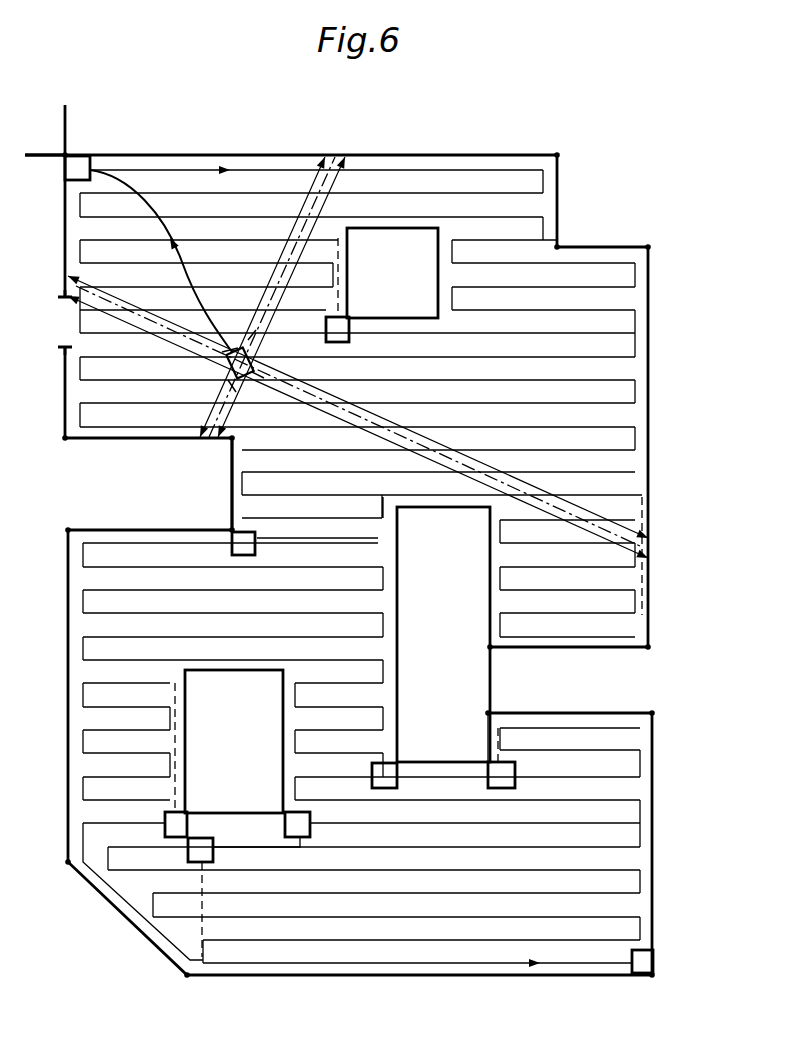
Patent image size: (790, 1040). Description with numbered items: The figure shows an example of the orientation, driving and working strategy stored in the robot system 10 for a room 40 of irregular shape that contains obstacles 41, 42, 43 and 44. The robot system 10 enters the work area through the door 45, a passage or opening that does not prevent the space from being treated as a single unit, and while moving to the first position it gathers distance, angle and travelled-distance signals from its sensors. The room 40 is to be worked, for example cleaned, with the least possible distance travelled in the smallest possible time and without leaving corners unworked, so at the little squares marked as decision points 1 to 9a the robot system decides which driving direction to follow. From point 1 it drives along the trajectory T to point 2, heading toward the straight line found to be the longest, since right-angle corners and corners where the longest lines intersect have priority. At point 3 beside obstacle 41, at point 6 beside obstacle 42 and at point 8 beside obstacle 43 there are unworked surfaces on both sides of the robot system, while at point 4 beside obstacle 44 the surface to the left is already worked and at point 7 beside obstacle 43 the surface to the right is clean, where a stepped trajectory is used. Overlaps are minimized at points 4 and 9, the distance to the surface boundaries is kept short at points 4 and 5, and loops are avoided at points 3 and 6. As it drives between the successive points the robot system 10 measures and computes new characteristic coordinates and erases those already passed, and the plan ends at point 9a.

The room 40 is at (262, 134).
The obstacle 41 is at (404, 304).
The obstacle 42 is at (458, 639).
The obstacle 43 is at (248, 775).
The obstacle 44 is at (232, 482).
The door 45 is at (62, 322).
The robot system 10 is at (226, 366).
The trajectory T is at (168, 228).
The decision point 1 is at (45, 145).
The decision point 2 is at (77, 168).
The decision point 3 is at (337, 329).
The decision point 4 is at (243, 543).
The decision point 5 is at (384, 775).
The decision point 6 is at (501, 775).
The decision point 7 is at (297, 824).
The decision point 8 is at (176, 824).
The decision point 9 is at (200, 850).
The decision point 9a is at (642, 961).